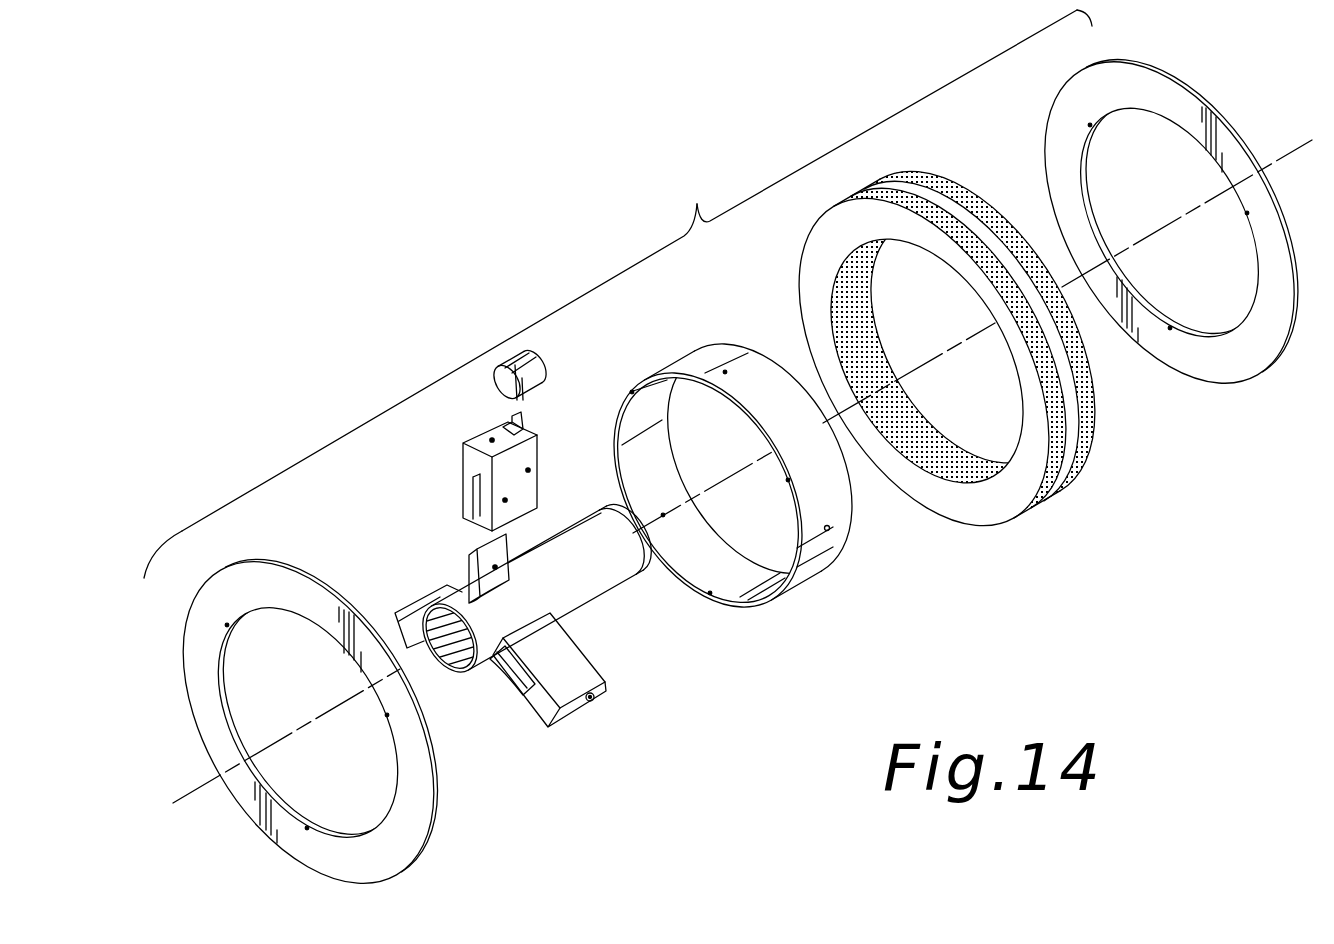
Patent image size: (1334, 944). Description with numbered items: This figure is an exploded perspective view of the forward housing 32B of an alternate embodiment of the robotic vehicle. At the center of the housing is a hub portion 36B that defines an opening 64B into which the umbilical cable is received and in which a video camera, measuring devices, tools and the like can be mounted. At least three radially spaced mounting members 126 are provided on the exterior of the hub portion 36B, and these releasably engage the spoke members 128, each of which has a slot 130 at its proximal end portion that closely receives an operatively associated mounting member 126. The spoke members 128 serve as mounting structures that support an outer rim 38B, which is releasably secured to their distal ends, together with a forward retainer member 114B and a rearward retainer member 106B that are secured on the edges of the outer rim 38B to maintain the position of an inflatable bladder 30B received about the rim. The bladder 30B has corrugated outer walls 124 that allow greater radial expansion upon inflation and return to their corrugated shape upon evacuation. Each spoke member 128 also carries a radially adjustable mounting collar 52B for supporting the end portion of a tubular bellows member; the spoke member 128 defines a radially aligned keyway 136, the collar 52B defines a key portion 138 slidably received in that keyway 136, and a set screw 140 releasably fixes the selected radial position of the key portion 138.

The forward housing 32B is at (618, 294).
The forward retainer member 114B is at (190, 655).
The end plate 106B is at (1055, 125).
The outer rim 38B is at (707, 345).
The inflatable bladder 30B is at (906, 345).
The corrugated outer walls 124 is at (913, 195).
The hub portion 36B is at (600, 583).
The opening 64B is at (437, 668).
The slots 130 is at (473, 485).
The spoke members 128 is at (440, 590).
The set screws 140 is at (528, 470).
The mounting members 126 is at (478, 585).
The keyway 136 is at (505, 417).
The key portions 138 is at (500, 380).
The mounting collars 52B is at (553, 360).